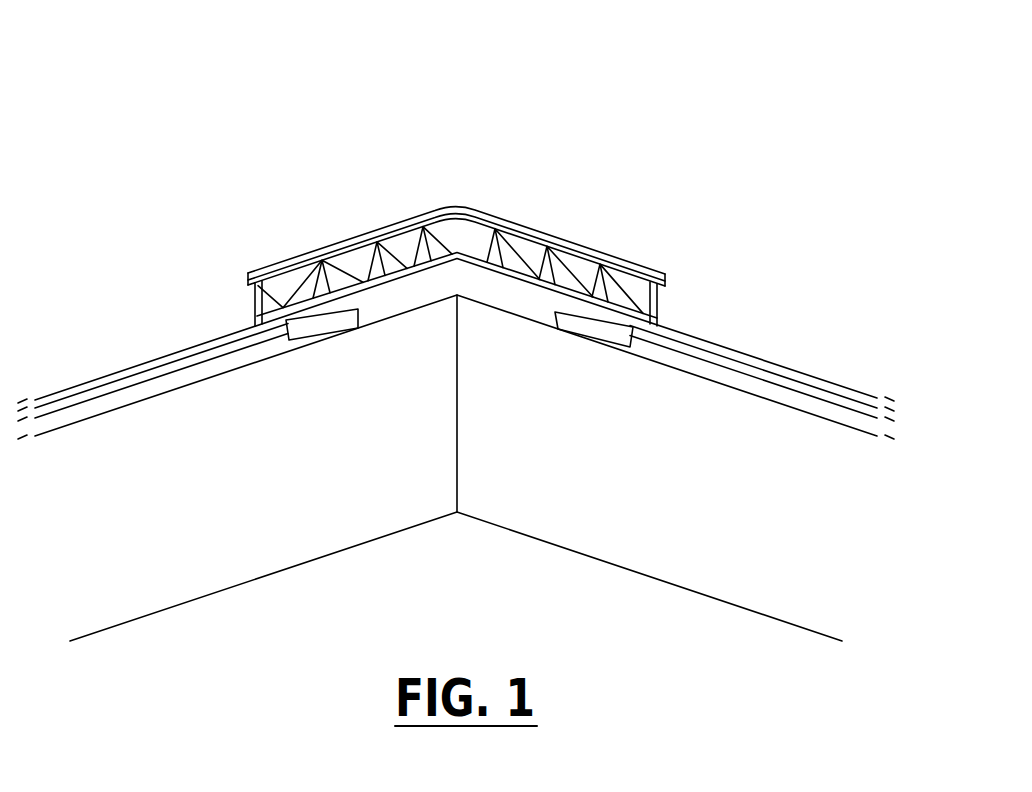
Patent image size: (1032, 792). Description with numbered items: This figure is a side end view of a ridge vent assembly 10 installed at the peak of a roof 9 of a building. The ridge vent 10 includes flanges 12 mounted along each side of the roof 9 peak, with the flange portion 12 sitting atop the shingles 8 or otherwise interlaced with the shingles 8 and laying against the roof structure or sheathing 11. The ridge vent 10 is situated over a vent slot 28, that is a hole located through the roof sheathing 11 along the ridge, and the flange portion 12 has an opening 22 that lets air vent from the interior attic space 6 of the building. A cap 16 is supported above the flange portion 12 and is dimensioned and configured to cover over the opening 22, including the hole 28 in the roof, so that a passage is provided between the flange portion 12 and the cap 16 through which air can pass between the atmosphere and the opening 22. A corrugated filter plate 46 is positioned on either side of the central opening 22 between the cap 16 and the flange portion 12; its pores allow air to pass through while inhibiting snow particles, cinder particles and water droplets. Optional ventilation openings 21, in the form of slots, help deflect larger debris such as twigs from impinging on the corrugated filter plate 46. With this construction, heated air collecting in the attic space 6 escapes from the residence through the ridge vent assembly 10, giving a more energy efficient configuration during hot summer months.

The attic space 6 is at (470, 608).
The shingles 8 is at (490, 214).
The roof 9 is at (757, 516).
The ridge vent assembly 10 is at (462, 250).
The roof structure/sheathing 11 is at (778, 386).
The flanges 12 is at (289, 312).
The cap 16 is at (313, 263).
The ventilation openings 21 is at (462, 283).
The opening 22 is at (466, 246).
The vent slot 28 is at (520, 300).
The corrugated filter plate 46 is at (352, 263).